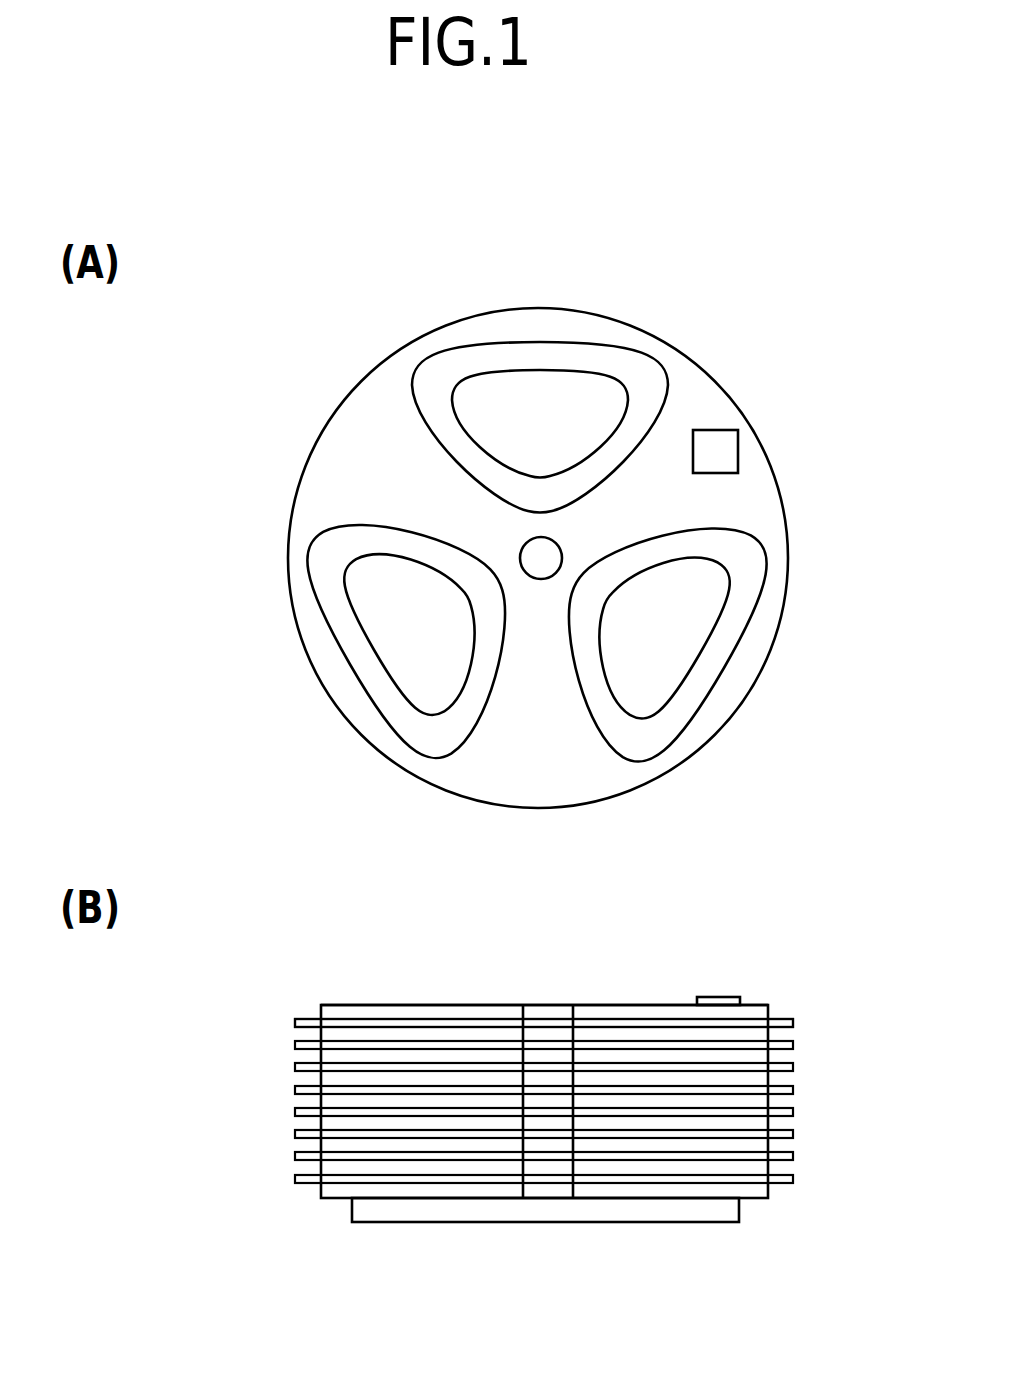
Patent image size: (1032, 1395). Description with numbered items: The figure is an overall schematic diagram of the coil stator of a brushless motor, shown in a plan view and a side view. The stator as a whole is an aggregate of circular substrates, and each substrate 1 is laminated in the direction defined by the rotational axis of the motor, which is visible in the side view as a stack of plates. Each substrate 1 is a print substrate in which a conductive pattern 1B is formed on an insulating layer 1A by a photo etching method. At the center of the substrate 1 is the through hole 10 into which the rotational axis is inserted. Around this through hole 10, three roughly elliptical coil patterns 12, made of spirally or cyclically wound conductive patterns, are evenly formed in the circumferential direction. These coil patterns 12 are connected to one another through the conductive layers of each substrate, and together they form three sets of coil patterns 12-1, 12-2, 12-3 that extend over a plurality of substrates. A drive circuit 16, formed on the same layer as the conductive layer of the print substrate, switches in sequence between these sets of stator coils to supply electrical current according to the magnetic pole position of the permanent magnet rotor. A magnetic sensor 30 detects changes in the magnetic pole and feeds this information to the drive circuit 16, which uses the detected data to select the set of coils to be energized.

The substrate 1 is at (713, 377).
The insulating layer 1A is at (303, 1019).
The conductive pattern 1B is at (317, 1007).
The through hole 10 is at (562, 548).
The coil pattern 12 is at (529, 502).
The first set of coil patterns 12-1 is at (347, 672).
The second set of coil patterns 12-2 is at (720, 685).
The third set of coil patterns 12-3 is at (526, 335).
The drive circuit 16 is at (632, 1223).
The magnetic sensor 30 is at (738, 452).